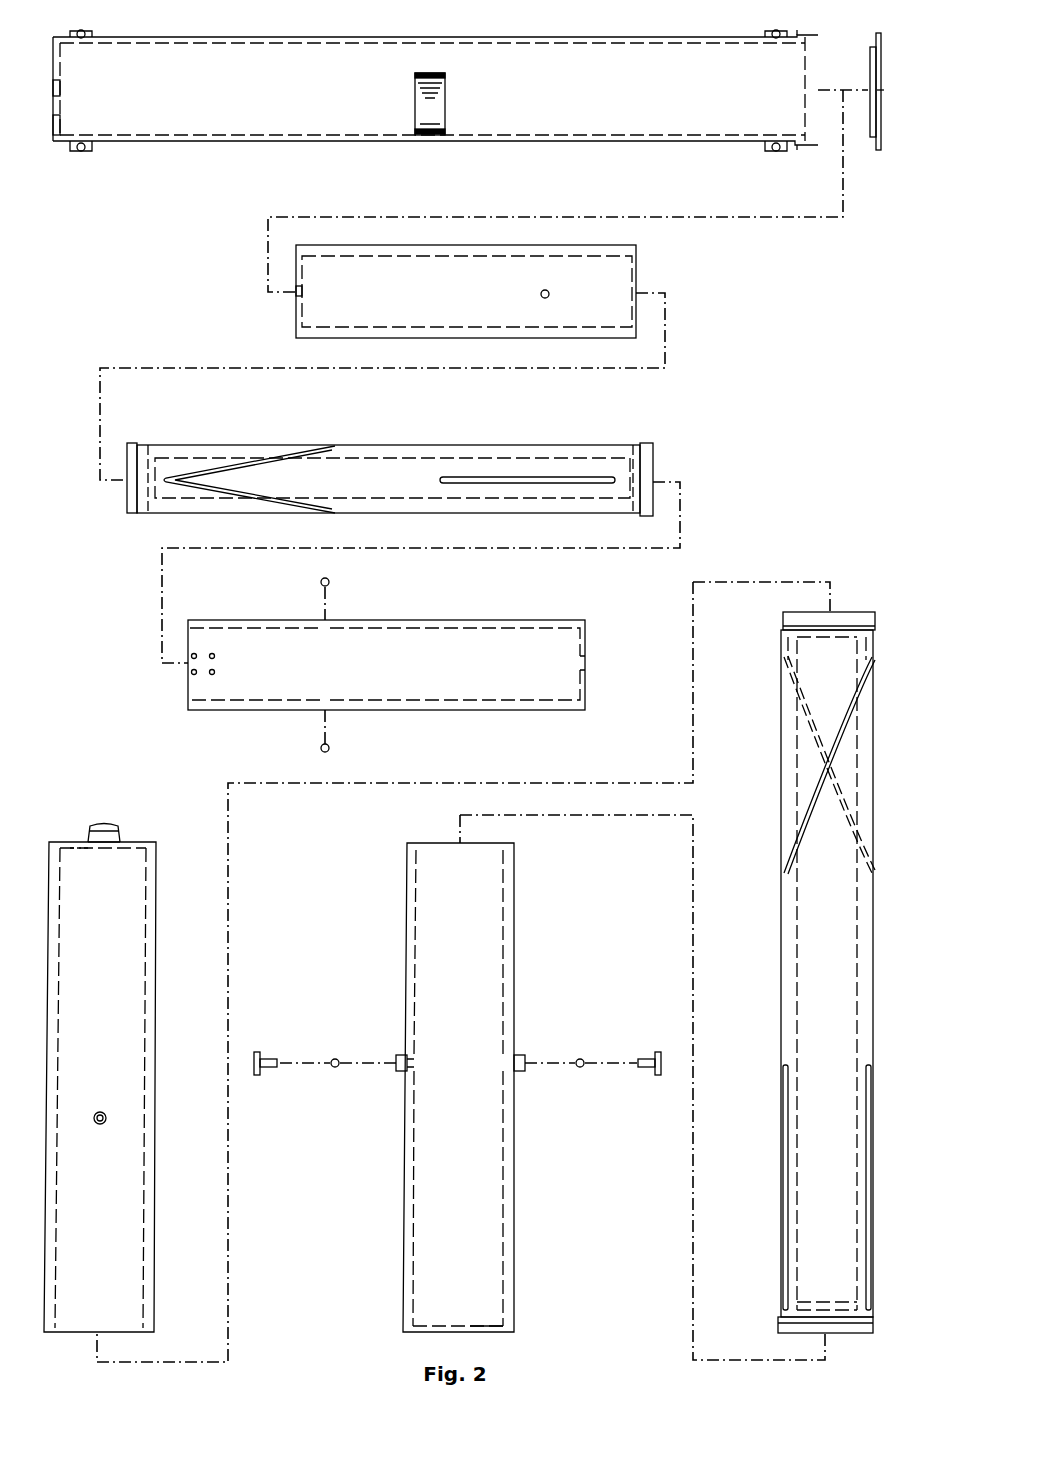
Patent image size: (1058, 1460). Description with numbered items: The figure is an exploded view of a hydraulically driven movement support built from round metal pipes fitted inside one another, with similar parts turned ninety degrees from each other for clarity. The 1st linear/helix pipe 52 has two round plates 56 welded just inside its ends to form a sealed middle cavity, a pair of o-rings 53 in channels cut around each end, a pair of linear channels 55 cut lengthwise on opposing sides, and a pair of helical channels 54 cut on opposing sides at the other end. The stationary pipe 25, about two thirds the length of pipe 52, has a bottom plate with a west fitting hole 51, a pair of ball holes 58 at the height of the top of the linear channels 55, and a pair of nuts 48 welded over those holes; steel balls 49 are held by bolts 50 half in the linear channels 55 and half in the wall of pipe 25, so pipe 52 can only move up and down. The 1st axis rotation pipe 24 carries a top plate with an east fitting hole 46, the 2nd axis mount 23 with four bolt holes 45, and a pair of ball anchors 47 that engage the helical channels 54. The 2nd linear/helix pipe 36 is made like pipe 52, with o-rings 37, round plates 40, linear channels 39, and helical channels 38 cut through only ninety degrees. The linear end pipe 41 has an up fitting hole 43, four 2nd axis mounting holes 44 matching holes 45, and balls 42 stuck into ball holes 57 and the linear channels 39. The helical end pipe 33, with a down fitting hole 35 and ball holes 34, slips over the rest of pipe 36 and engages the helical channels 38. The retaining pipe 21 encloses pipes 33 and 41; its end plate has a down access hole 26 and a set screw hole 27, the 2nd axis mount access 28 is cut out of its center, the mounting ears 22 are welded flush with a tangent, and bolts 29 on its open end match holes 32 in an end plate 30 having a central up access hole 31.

The retaining pipe 21 is at (244, 110).
The mounting ears 22 is at (86, 150).
The 2nd axis mount 23 is at (90, 828).
The 1st axis rotation pipe 24 is at (150, 945).
The stationary pipe 25 is at (508, 928).
The down access hole 26 is at (57, 88).
The set screw hole 27 is at (62, 124).
The 2nd axis mount access 28 is at (430, 113).
The bolts 29 is at (812, 148).
The end plate 30 is at (880, 105).
The up access hole 31 is at (882, 90).
The holes 32 is at (872, 140).
The helical end pipe 33 is at (619, 271).
The ball holes 34 is at (541, 294).
The down fitting hole 35 is at (305, 291).
The 2nd linear/helix pipe 36 is at (362, 445).
The o-rings 37 is at (140, 445).
The helical channels 38 is at (240, 455).
The linear channels 39 is at (495, 477).
The round plates 40 is at (627, 462).
The linear end pipe 41 is at (513, 626).
The balls 42 is at (330, 582).
The up fitting hole 43 is at (585, 663).
The 2nd axis mounting holes 44 is at (218, 658).
The bolt holes 45 is at (108, 826).
The east fitting hole 46 is at (78, 848).
The ball anchors 47 is at (106, 1115).
The nuts 48 is at (397, 1057).
The steel balls 49 is at (334, 1068).
The bolts 50 is at (264, 1070).
The west fitting hole 51 is at (480, 1327).
The 1st linear/helix pipe 52 is at (788, 980).
The o-rings 53 is at (790, 623).
The helical channels 54 is at (815, 770).
The linear channels 55 is at (783, 1100).
The round plates 56 is at (833, 1300).
The ball holes 57 is at (326, 698).
The ball holes 58 is at (413, 1065).